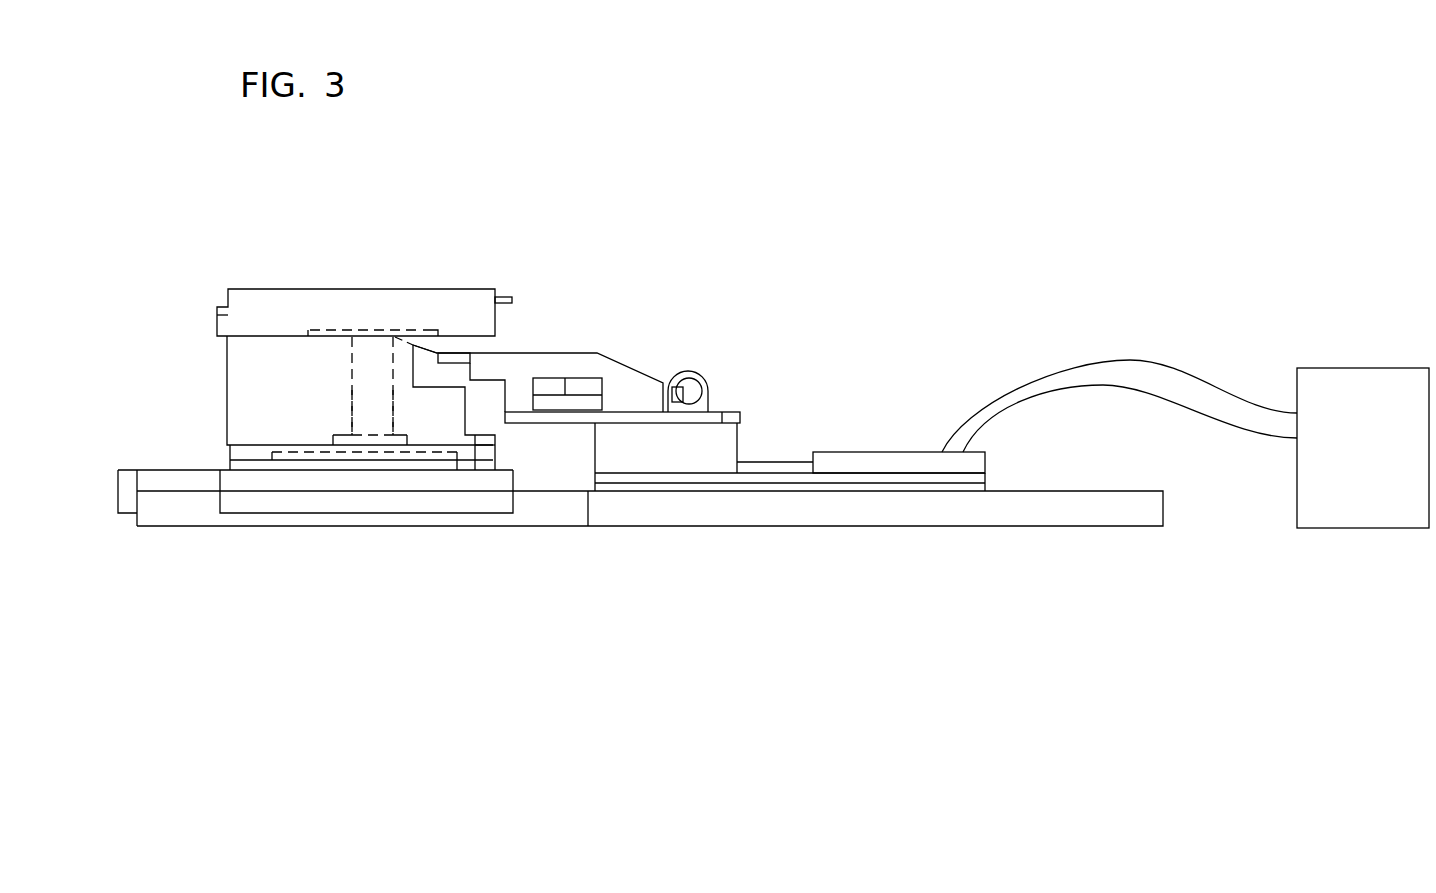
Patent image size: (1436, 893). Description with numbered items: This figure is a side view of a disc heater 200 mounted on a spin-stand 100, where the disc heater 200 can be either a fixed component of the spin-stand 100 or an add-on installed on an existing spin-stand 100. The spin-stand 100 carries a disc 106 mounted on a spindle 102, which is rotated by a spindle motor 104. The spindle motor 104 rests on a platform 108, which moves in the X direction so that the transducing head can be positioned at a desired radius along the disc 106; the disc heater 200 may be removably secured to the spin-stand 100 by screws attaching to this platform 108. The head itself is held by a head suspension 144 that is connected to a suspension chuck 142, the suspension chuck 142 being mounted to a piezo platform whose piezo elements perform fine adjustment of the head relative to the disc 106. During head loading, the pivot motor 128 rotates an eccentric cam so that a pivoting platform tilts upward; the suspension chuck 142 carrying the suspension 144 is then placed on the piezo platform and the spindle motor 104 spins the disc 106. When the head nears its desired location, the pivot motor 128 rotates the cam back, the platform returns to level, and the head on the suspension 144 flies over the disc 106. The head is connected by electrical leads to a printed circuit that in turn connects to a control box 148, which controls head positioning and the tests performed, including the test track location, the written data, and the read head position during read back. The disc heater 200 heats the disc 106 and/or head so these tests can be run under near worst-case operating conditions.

The spin-stand 100 is at (771, 331).
The disc heater 200 is at (265, 263).
The spindle 102 is at (350, 387).
The spindle motor 104 is at (352, 434).
The disc 106 is at (333, 330).
The platform 108 is at (477, 435).
The pivot motor 128 is at (688, 371).
The suspension chuck 142 is at (415, 344).
The head suspension 144 is at (415, 343).
The control box 148 is at (1370, 367).